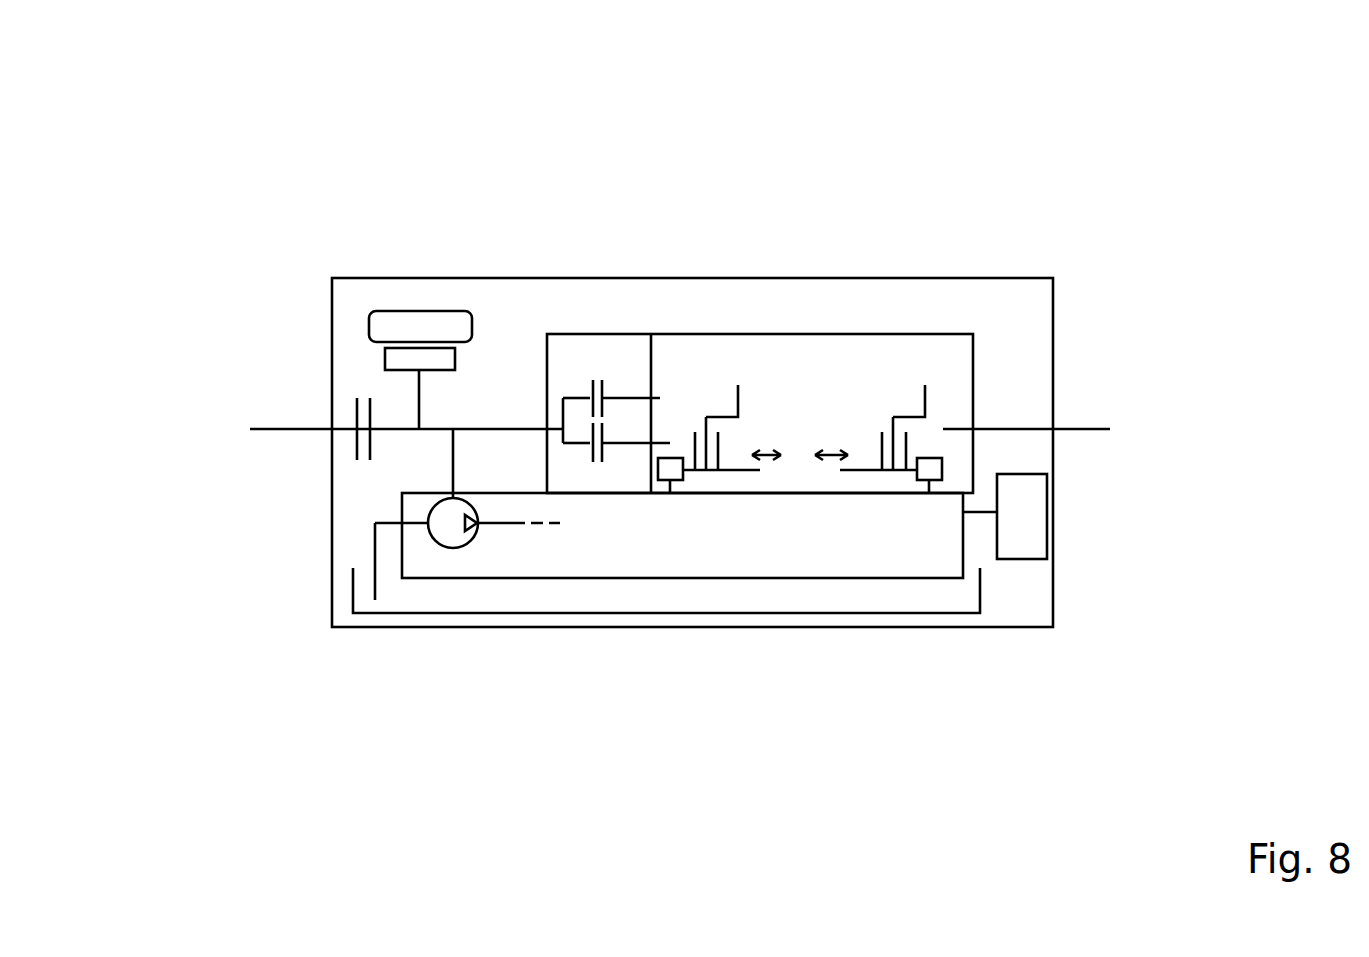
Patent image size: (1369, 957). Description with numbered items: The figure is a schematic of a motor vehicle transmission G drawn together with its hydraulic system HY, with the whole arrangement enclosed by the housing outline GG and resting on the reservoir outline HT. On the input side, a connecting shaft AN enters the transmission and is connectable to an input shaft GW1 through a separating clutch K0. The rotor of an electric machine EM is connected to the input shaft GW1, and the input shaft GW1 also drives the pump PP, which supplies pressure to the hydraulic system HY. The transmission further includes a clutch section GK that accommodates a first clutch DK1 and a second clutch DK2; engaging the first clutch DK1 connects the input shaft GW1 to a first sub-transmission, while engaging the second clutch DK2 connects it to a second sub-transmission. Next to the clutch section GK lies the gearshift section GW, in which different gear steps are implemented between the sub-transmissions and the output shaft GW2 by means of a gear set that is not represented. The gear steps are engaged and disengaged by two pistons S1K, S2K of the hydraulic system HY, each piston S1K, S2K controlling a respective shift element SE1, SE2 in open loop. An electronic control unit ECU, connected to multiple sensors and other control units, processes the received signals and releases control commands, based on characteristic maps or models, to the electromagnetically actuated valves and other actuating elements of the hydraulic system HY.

The motor vehicle transmission G is at (966, 208).
The transmission housing GG is at (468, 279).
The clutch section GK is at (608, 334).
The gearshift section GW is at (792, 334).
The connecting shaft AN is at (288, 428).
The input shaft GW1 is at (398, 436).
The output shaft GW2 is at (1083, 427).
The separating clutch K0 is at (356, 378).
The electric machine EM is at (424, 296).
The first clutch DK1 is at (577, 376).
The second clutch DK2 is at (616, 412).
The shift element SE1 is at (665, 457).
The shift element SE2 is at (891, 457).
The piston S1K is at (737, 470).
The piston S2K is at (863, 470).
The pump PP is at (433, 563).
The hydraulic system HY is at (733, 579).
The hydraulic fluid reservoir / sump HT is at (791, 613).
The electronic control unit ECU is at (1022, 560).